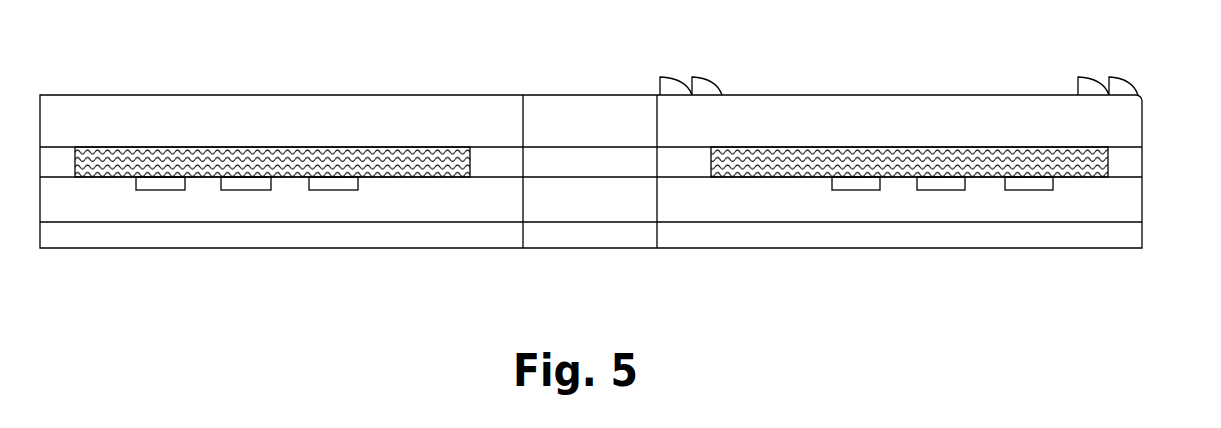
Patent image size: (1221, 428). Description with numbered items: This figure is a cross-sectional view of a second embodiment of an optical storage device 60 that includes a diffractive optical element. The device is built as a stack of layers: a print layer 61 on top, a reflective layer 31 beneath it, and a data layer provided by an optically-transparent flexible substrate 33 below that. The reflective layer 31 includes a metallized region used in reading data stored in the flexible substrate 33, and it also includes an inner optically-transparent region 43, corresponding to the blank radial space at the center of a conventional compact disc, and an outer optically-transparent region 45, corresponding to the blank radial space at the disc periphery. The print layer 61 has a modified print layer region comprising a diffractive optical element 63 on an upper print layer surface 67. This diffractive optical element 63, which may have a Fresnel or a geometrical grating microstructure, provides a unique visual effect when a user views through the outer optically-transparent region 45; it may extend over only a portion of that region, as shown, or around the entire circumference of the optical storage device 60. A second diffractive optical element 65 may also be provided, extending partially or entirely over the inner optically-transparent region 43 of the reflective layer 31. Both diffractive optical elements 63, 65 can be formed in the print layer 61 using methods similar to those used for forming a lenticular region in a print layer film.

The optical storage device 60 is at (601, 306).
The print layer 61 is at (1125, 127).
The reflective layer 31 is at (1128, 165).
The optically-transparent flexible substrate 33 is at (1127, 205).
The inner optically-transparent region 43 is at (680, 140).
The outer optically-transparent region 45 is at (1122, 145).
The diffractive optical element 63 is at (1098, 70).
The second diffractive optical element 65 is at (707, 74).
The upper print layer surface 67 is at (938, 95).